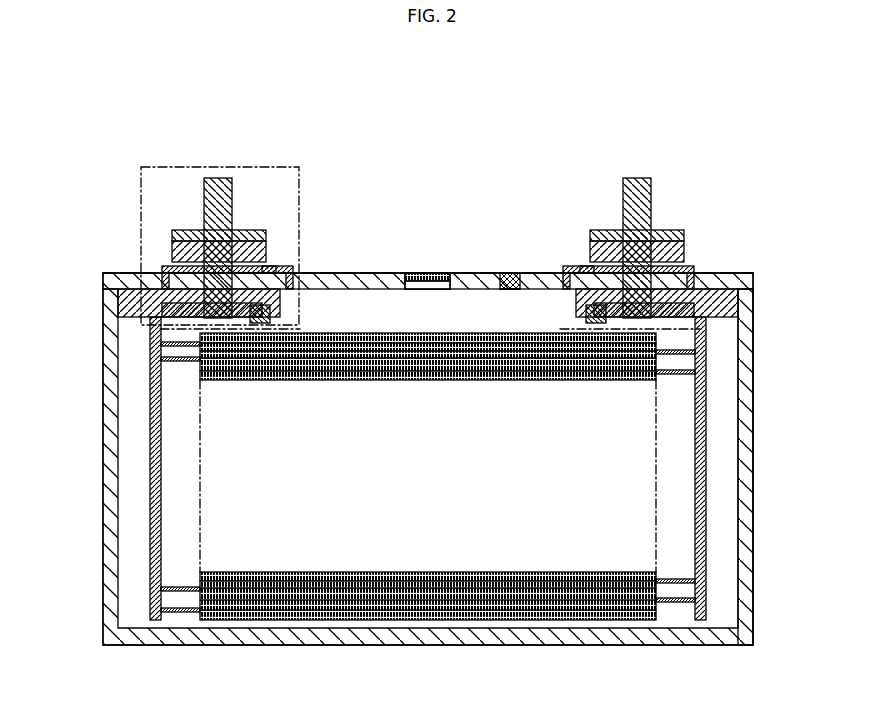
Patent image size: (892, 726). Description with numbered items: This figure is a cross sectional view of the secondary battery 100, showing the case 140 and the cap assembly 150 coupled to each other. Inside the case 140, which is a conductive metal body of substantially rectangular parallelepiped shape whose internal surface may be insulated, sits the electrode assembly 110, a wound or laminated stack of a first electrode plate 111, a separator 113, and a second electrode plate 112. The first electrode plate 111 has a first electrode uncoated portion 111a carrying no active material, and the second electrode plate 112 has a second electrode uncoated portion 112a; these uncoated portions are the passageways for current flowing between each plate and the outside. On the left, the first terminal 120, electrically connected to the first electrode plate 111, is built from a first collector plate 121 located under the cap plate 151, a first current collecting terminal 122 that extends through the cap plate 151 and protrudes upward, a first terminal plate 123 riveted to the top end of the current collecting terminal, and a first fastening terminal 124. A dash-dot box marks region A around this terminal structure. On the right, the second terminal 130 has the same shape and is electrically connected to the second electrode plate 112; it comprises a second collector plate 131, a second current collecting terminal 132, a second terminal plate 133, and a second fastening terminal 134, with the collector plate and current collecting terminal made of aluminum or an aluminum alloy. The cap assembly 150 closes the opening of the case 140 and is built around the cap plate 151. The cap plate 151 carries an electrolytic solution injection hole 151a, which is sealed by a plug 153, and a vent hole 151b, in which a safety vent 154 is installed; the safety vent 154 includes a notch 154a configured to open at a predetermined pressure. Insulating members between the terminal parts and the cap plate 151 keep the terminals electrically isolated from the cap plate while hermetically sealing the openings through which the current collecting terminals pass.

The secondary battery 100 is at (751, 133).
The electrode assembly 110 is at (512, 632).
The first electrode plate 111 is at (311, 620).
The first electrode uncoated portion 111a is at (182, 614).
The second electrode plate 112 is at (581, 620).
The second electrode uncoated portion 112a is at (676, 604).
The separator 113 is at (445, 606).
The first terminal 120 is at (208, 219).
The first collector plate 121 is at (138, 453).
The first current collecting terminal 122 is at (188, 250).
The first terminal plate 123 is at (160, 234).
The first fastening terminal 124 is at (236, 182).
The second terminal 130 is at (646, 221).
The second collector plate 131 is at (718, 491).
The second current collecting terminal 132 is at (666, 252).
The second terminal plate 133 is at (694, 228).
The second fastening terminal 134 is at (666, 192).
The case 140 is at (748, 376).
The cap assembly 150 is at (505, 182).
The cap plate 151 is at (344, 273).
The electrolytic solution injection hole 151a is at (503, 290).
The vent hole 151b is at (428, 290).
The plug 153 is at (511, 273).
The safety vent 154 is at (446, 274).
The notch 154a is at (426, 274).
The region A is at (289, 167).